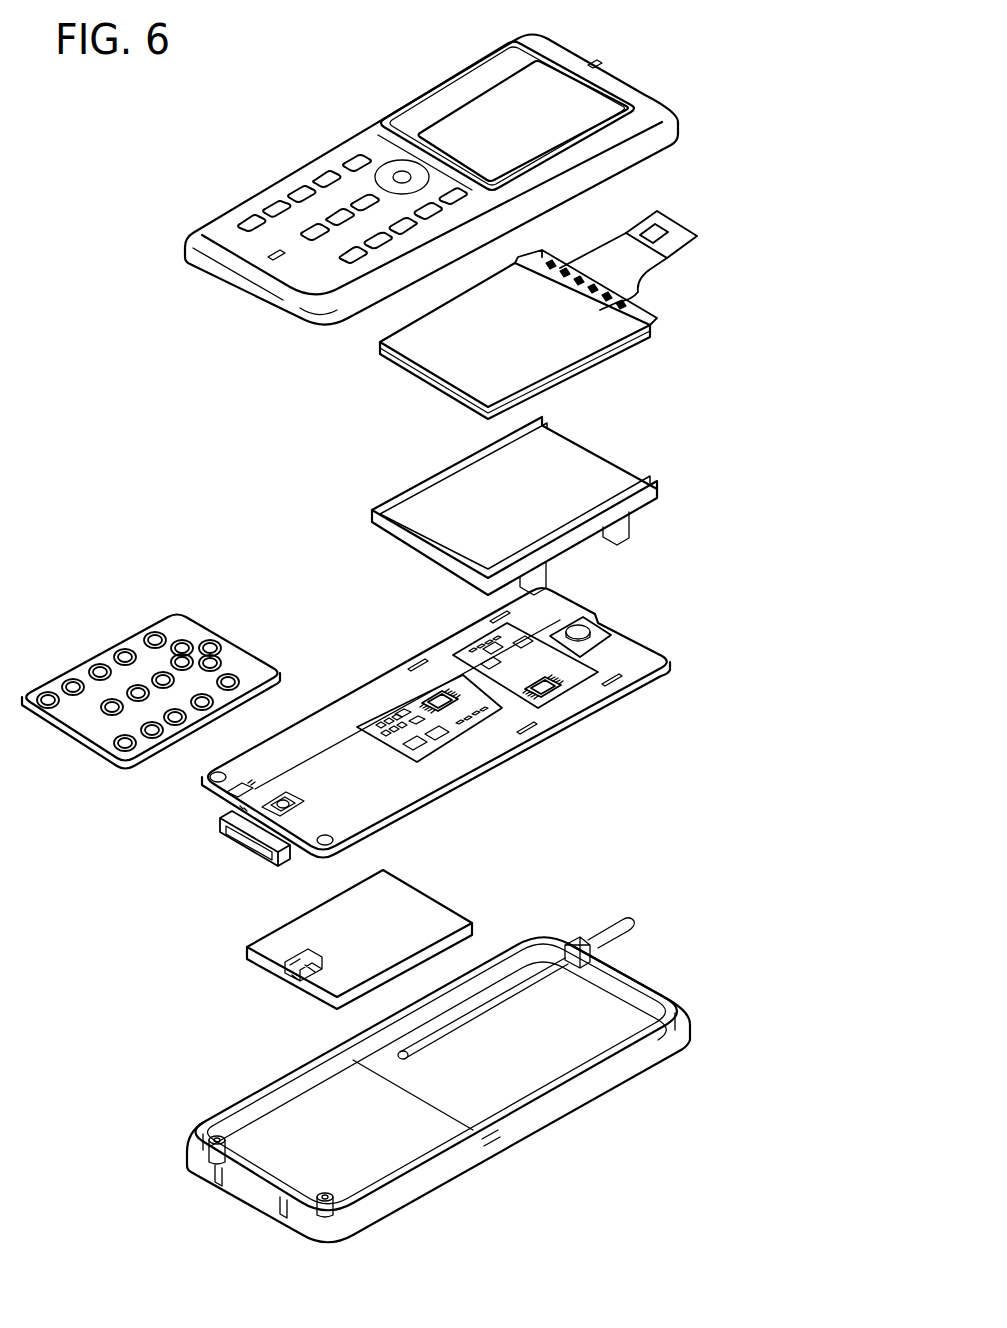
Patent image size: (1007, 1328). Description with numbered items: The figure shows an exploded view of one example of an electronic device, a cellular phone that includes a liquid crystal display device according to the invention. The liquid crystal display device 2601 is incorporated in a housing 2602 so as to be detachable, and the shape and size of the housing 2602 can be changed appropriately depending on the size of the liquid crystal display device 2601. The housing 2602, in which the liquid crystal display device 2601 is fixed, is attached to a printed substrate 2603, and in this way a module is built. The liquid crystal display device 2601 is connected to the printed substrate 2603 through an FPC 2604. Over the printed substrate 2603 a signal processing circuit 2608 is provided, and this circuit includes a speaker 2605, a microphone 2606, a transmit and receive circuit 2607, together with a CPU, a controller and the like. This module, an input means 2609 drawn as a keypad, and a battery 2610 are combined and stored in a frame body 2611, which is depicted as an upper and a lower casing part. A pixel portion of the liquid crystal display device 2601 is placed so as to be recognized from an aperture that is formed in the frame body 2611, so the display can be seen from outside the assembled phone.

The liquid crystal display device 2601 is at (613, 350).
The housing 2602 is at (633, 500).
The printed substrate 2603 is at (428, 725).
The FPC 2604 is at (672, 253).
The speaker 2605 is at (598, 623).
The microphone 2606 is at (225, 830).
The transmit and receive circuit 2607 is at (598, 712).
The signal processing circuit 2608 is at (437, 698).
The input means 2609 is at (137, 641).
The battery 2610 is at (297, 977).
The frame body 2611 is at (643, 142).